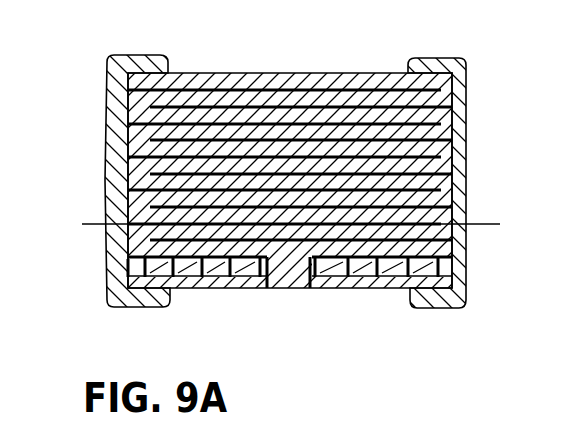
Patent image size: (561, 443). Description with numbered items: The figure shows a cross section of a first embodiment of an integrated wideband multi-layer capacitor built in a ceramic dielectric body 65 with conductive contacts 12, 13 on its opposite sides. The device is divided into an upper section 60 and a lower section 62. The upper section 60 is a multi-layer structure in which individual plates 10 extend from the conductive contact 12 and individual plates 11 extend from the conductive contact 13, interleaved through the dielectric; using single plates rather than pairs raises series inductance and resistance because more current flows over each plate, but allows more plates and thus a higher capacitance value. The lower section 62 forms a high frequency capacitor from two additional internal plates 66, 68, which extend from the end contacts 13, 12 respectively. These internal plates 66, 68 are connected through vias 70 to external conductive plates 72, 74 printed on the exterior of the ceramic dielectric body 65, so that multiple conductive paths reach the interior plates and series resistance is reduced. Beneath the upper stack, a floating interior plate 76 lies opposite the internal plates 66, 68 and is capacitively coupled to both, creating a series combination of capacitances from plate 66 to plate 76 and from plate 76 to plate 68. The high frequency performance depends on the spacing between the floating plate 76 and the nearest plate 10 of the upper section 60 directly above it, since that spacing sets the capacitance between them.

The plate 10 is at (234, 110).
The plate 11 is at (337, 110).
The conductive contact 12 is at (112, 64).
The conductive contact 13 is at (470, 61).
The upper section 60 is at (301, 134).
The lower section 62 is at (300, 298).
The ceramic dielectric body 65 is at (363, 75).
The internal plate 66 is at (300, 286).
The internal plate 68 is at (268, 270).
The vias 70 is at (203, 289).
The external conductive plate 72 is at (350, 290).
The external conductive plate 74 is at (230, 290).
The floating interior plate 76 is at (150, 253).